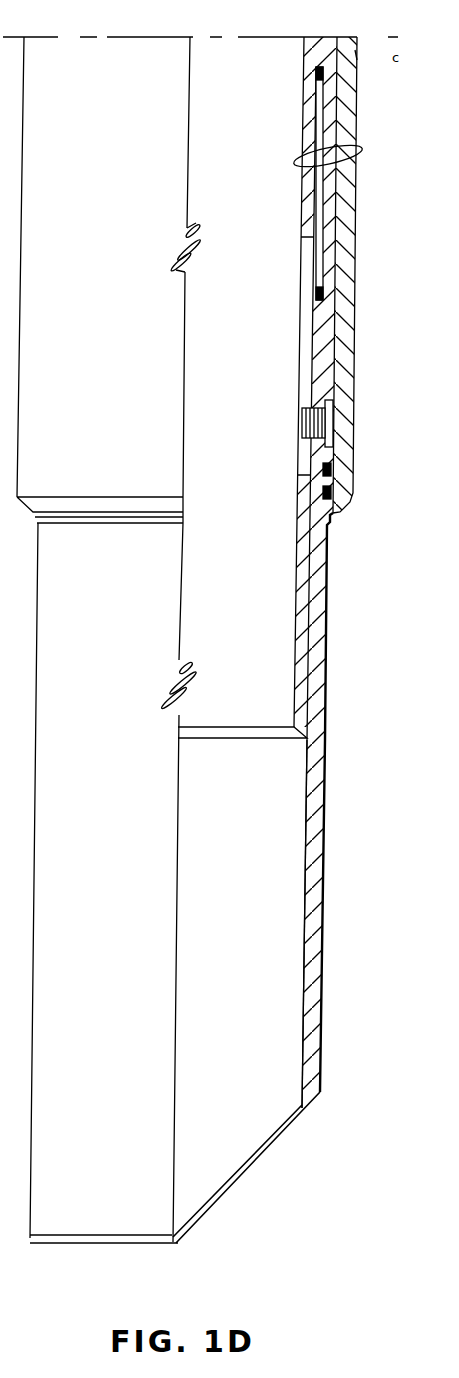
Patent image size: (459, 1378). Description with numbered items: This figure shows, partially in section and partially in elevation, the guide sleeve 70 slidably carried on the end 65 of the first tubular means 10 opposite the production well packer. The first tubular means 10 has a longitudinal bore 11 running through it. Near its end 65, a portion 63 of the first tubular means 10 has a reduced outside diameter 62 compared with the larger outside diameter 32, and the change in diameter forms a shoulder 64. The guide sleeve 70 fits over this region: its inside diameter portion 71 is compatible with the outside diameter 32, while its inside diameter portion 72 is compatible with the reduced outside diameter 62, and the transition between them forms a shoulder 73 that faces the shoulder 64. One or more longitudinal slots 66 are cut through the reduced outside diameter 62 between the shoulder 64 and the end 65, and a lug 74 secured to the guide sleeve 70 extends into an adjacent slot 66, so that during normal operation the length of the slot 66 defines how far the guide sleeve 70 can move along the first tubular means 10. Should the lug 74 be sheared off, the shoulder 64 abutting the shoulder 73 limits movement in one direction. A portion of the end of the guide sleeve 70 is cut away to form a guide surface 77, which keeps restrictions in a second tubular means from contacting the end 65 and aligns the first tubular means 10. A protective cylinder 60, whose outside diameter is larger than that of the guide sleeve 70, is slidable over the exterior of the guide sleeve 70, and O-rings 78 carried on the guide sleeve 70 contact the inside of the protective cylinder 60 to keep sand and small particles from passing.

The first tubular means 10 is at (297, 623).
The longitudinal bore 11 is at (240, 225).
The outside diameter 32 is at (355, 53).
The protective cylinder 60 is at (343, 202).
The reduced outside diameter 62 is at (320, 122).
The portion 63 is at (296, 125).
The shoulder 64 is at (318, 78).
The end 65 is at (301, 742).
The longitudinal slot 66 is at (305, 340).
The guide sleeve 70 is at (323, 925).
The inside diameter portion 71 is at (358, 151).
The inside diameter portion 72 is at (306, 868).
The shoulder 73 is at (318, 284).
The lug 74 is at (328, 422).
The guide surface 77 is at (293, 1123).
The O-rings 78 is at (330, 492).